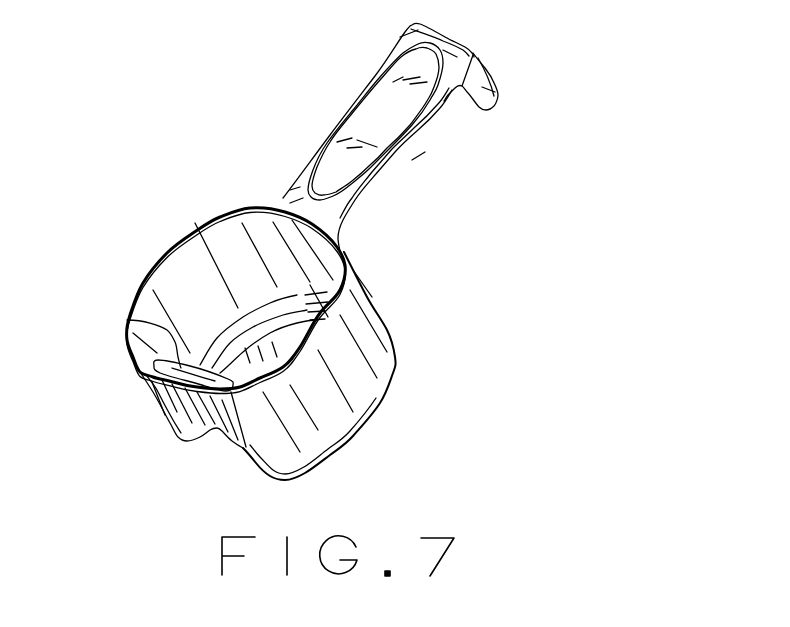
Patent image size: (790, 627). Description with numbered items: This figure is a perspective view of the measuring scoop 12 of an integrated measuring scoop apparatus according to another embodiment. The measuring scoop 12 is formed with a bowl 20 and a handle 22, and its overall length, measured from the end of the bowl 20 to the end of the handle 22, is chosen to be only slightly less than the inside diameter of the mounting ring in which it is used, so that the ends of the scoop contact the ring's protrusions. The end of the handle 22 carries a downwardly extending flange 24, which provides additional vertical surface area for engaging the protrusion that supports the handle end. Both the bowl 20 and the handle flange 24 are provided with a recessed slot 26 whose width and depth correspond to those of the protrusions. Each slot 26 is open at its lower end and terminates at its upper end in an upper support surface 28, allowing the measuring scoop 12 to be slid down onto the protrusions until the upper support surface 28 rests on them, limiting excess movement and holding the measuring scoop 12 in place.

The measuring scoop 12 is at (365, 261).
The bowl 20 is at (378, 403).
The handle 22 is at (358, 78).
The downwardly extending flange 24 is at (499, 91).
The recessed slot 26 is at (217, 430).
The upper support surface 28 is at (127, 320).